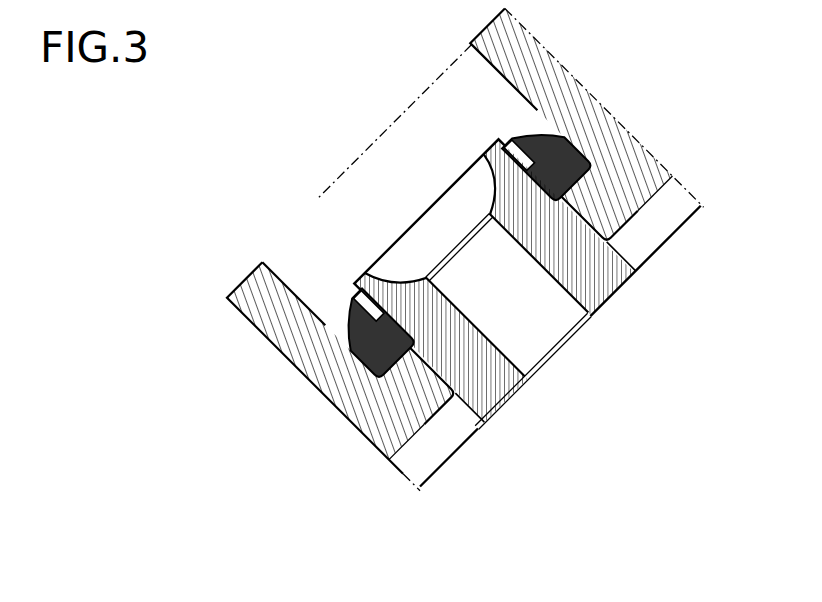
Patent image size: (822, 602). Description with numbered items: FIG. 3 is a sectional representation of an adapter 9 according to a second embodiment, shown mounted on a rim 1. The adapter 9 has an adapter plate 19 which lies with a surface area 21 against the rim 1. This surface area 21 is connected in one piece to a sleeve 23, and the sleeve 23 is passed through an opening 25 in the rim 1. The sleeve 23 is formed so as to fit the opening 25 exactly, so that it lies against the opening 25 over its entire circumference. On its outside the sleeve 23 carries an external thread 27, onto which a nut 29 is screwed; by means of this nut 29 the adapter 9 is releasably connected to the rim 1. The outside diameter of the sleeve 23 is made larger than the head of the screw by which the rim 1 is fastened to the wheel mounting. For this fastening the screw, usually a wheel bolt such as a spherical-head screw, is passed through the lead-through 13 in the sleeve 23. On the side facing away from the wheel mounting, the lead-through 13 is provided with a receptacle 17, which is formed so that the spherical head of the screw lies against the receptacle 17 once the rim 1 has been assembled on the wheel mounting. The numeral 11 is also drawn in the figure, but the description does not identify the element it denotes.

The rim 1 is at (549, 70).
The adapter 9 is at (610, 273).
The end wall 11 is at (613, 301).
The lead-through 13 is at (533, 350).
The receptacle 17 is at (399, 276).
The adapter plate 19 is at (455, 430).
The surface area 21 is at (634, 213).
The sleeve 23 is at (507, 183).
The opening 25 is at (460, 365).
The external thread 27 is at (356, 295).
The nut 29 is at (356, 344).